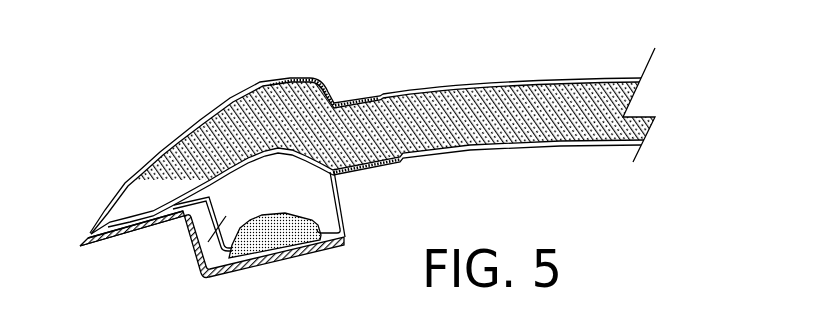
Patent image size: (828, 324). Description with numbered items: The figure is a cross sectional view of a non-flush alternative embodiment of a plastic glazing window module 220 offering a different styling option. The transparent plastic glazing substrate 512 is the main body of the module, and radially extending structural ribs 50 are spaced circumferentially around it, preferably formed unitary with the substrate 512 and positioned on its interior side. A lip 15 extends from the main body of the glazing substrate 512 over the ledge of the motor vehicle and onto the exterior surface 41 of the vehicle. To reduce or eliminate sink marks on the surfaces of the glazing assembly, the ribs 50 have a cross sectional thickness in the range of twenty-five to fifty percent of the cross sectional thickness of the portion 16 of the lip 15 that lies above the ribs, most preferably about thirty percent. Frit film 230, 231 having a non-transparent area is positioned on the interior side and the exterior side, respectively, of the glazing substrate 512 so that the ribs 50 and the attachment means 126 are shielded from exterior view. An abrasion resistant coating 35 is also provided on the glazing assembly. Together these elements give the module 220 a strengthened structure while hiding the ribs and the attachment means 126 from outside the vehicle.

The lip 15 is at (140, 173).
The portion of the lip above the ribs 16 is at (273, 82).
The abrasion resistant coating 35 is at (505, 150).
The exterior surface 41 is at (125, 237).
The structural ribs 50 is at (196, 263).
The attachment means 126 is at (282, 243).
The plastic glazing window module 220 is at (583, 62).
The frit film 230 is at (353, 176).
The frit film 231 is at (258, 82).
The transparent plastic glazing substrate 512 is at (623, 100).